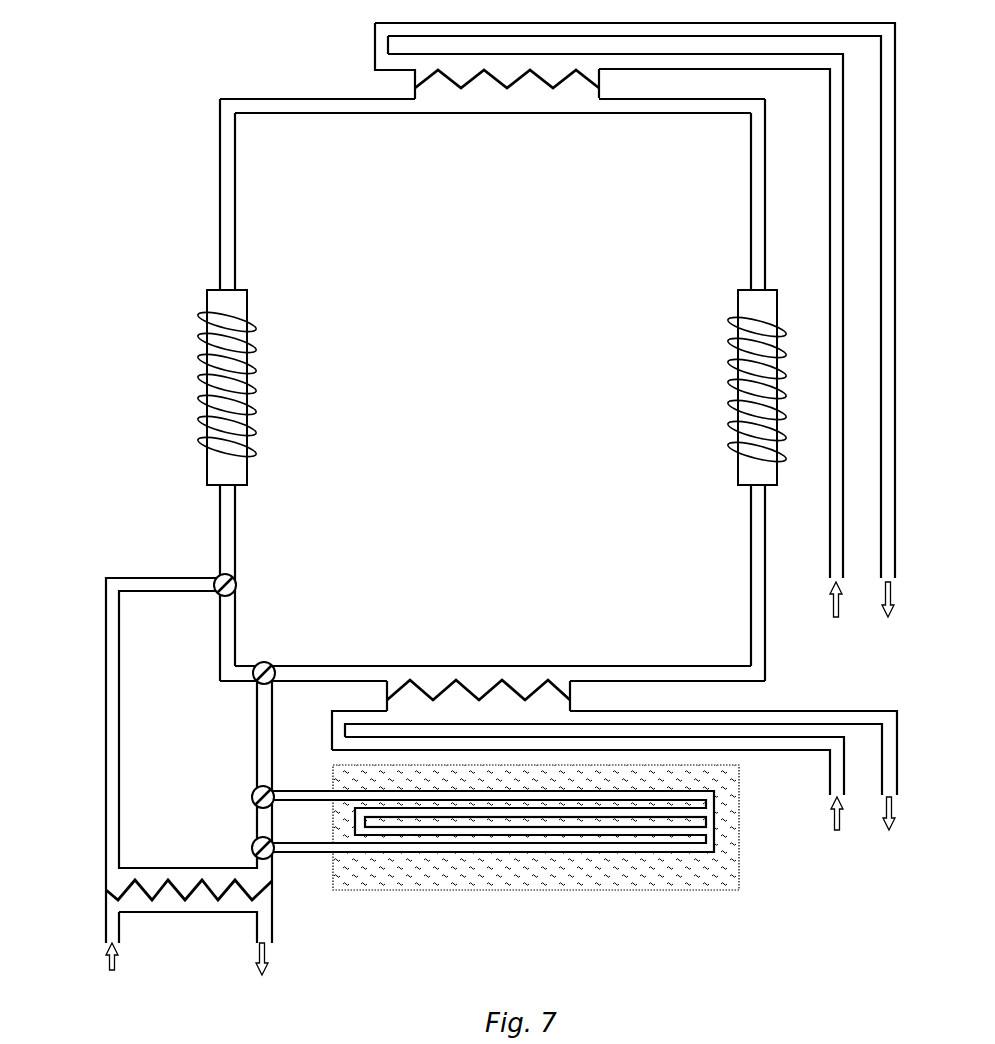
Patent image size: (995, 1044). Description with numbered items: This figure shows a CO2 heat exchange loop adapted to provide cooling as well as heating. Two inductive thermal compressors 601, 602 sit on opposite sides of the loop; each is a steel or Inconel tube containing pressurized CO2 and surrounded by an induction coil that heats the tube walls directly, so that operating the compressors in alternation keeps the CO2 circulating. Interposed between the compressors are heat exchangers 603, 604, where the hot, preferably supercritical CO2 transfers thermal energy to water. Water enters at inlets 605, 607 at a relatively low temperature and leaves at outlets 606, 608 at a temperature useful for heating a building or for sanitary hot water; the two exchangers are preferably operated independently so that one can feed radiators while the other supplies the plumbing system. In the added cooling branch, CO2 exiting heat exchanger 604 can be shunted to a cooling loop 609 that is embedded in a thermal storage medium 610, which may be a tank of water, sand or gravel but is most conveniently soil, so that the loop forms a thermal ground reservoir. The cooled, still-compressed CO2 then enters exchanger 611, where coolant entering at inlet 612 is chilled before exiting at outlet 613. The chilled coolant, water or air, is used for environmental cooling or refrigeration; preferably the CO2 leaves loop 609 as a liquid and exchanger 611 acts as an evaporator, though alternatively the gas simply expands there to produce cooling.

The inductive thermal compressor 601 is at (258, 389).
The inductive thermal compressor 602 is at (726, 401).
The heat exchanger 603 is at (410, 82).
The heat exchanger 604 is at (384, 690).
The inlet 605 is at (827, 785).
The outlet 606 is at (897, 795).
The inlet 607 is at (828, 573).
The outlet 608 is at (897, 577).
The cooling loop 609 is at (309, 790).
The thermal storage medium 610 is at (722, 874).
The exchanger 611 is at (106, 891).
The inlet 612 is at (120, 942).
The outlet 613 is at (273, 933).